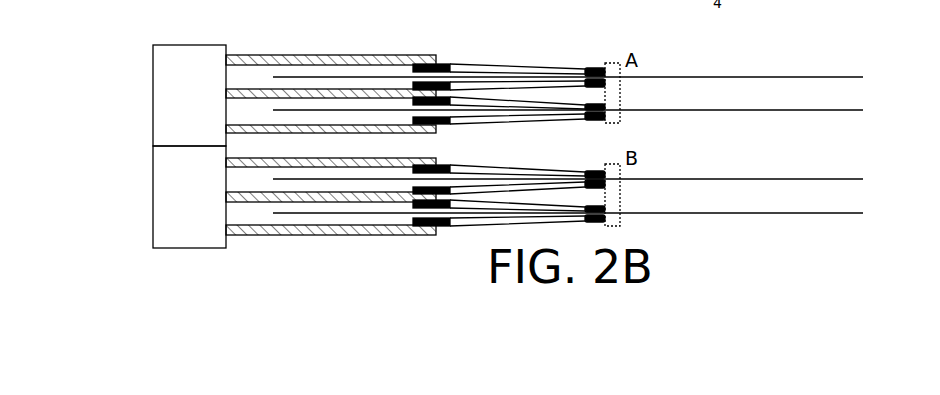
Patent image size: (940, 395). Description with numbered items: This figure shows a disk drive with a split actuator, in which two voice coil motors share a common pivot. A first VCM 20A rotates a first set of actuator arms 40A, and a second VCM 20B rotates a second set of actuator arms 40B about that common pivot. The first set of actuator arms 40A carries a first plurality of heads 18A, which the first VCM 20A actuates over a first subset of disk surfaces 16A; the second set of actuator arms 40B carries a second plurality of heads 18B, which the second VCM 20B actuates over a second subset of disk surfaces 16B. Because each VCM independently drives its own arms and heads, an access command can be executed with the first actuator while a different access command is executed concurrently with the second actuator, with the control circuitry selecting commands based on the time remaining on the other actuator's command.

The first VCM 20A is at (153, 52).
The second VCM 20B is at (153, 158).
The first set of actuator arms 40A is at (311, 55).
The second set of actuator arms 40B is at (297, 237).
The first plurality of heads 18A is at (594, 67).
The second plurality of heads 18B is at (594, 169).
The first subset of disk surfaces 16A is at (856, 71).
The second subset of disk surfaces 16B is at (850, 176).